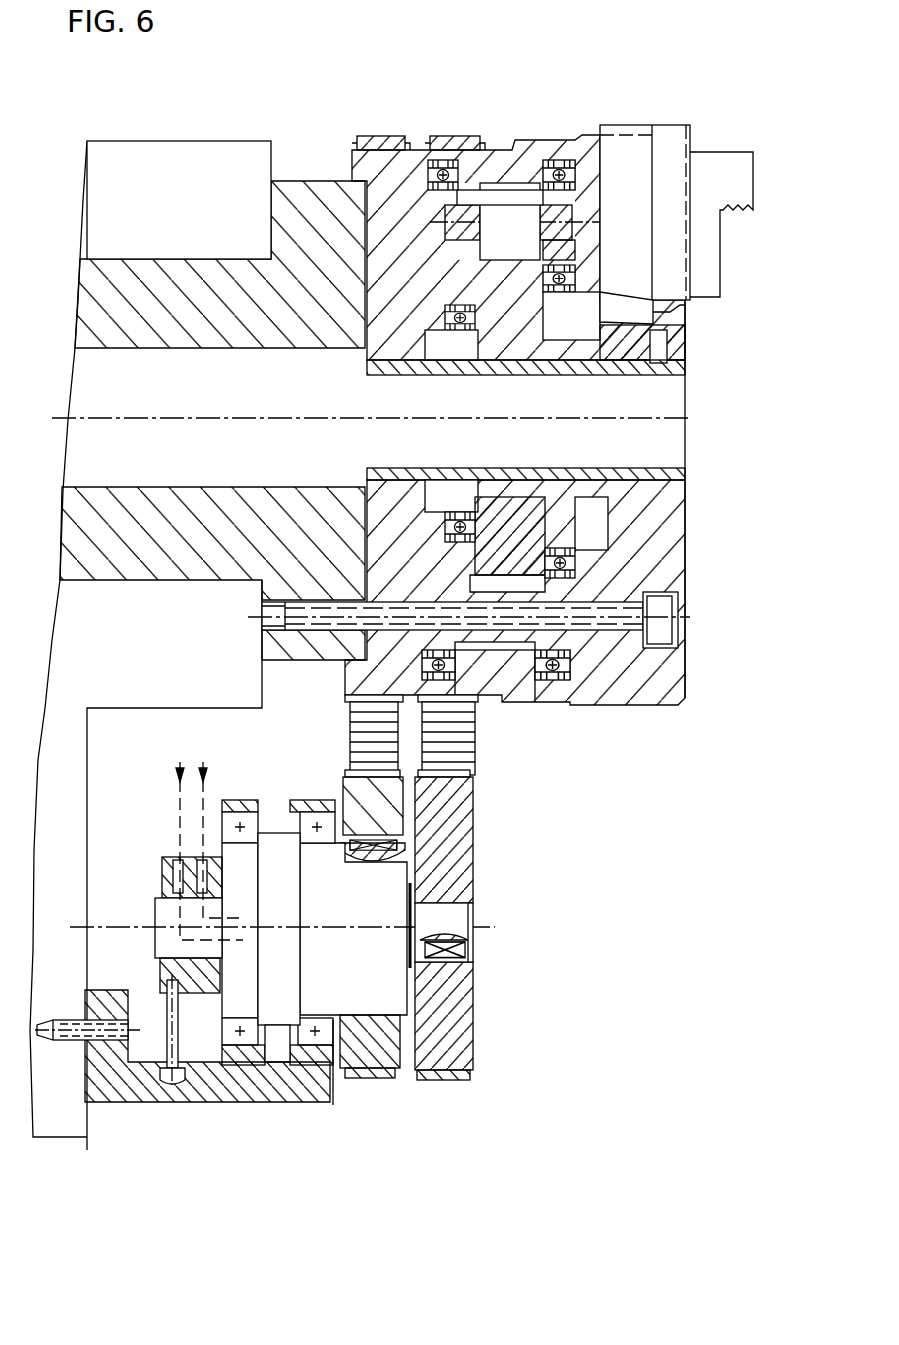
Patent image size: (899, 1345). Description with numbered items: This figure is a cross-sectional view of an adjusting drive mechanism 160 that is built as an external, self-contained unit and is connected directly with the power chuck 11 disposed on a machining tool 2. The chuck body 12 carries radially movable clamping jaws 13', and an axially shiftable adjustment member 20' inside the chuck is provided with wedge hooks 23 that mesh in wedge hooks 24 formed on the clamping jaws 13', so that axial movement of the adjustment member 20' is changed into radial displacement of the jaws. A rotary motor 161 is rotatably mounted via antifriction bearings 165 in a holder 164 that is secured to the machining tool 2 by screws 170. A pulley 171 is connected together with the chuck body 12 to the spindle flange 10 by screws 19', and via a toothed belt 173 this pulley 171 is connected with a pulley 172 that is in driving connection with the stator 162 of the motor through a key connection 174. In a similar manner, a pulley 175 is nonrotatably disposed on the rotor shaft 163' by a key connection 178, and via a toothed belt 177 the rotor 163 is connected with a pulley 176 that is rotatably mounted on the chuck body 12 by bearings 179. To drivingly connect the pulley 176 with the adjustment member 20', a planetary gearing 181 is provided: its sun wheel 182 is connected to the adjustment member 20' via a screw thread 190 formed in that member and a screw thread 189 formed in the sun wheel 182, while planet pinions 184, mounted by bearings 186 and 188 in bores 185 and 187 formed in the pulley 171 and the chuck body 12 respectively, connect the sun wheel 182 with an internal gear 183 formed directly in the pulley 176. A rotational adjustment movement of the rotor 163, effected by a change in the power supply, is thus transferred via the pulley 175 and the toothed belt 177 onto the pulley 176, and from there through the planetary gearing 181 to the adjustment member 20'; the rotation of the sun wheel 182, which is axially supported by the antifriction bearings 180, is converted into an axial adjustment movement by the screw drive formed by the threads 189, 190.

The machining tool 2 is at (235, 150).
The flange 10 is at (303, 192).
The power chuck 11 is at (692, 675).
The chuck body 12 is at (636, 688).
The clamping jaws 13' is at (680, 180).
The screws 19' is at (503, 615).
The adjustment member 20' is at (575, 420).
The wedge hooks 23 is at (640, 308).
The wedge hooks 24 is at (623, 328).
The adjusting drive mechanism 160 is at (510, 1092).
The rotary motor 161 is at (277, 1065).
The stator 162 is at (373, 1080).
The rotor 163 is at (482, 912).
The rotor shaft 163' is at (494, 928).
The holder 164 is at (312, 1097).
The antifriction bearings 165 is at (230, 1060).
The screws 170 is at (108, 1047).
The pulley 171 is at (372, 162).
The pulley 172 is at (400, 1065).
The toothed belt 173 is at (400, 725).
The key connection 174 is at (350, 850).
The pulley 175 is at (455, 1012).
The pulley 176 is at (455, 153).
The toothed belt 177 is at (478, 765).
The key connection 178 is at (465, 945).
The bearings 179 is at (473, 710).
The antifriction bearings 180 is at (448, 525).
The planetary gearing 181 is at (528, 106).
The sun wheel 182 is at (505, 525).
The internal gear 183 is at (545, 700).
The planet pinions 184 is at (498, 205).
The bore 185 is at (447, 208).
The bearing 186 is at (388, 258).
The bore 187 is at (572, 230).
The bearing 188 is at (570, 196).
The screw thread 189 is at (483, 348).
The screw thread 190 is at (550, 347).